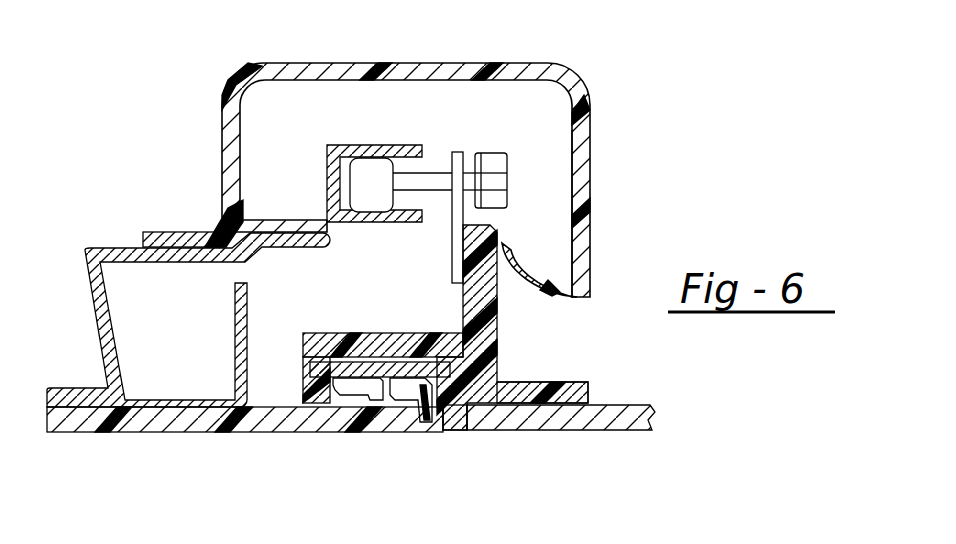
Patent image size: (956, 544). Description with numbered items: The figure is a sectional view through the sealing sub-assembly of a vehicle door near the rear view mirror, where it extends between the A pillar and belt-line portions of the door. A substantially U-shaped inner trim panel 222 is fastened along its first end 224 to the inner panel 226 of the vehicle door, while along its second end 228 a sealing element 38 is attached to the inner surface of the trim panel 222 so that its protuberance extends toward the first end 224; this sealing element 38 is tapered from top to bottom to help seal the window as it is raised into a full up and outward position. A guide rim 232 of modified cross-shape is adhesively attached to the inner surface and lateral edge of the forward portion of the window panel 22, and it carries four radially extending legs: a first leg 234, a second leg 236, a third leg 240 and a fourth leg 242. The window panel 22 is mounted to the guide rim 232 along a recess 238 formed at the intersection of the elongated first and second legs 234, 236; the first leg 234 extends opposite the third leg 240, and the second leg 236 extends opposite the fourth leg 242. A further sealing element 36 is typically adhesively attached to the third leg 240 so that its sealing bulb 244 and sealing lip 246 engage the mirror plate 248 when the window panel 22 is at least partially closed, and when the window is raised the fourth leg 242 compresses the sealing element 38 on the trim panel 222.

The window panel 22 is at (605, 432).
The sealing element 36 is at (303, 370).
The sealing element 38 is at (540, 262).
The inner trim panel 222 is at (413, 63).
The first end 224 is at (190, 233).
The inner panel 226 is at (141, 258).
The second end 228 is at (577, 197).
The guide rim 232 is at (455, 321).
The first leg 234 is at (590, 395).
The second leg 236 is at (457, 420).
The recess 238 is at (537, 408).
The third leg 240 is at (370, 345).
The fourth leg 242 is at (453, 242).
The sealing bulb 244 is at (440, 425).
The sealing lip 246 is at (350, 410).
The mirror plate 248 is at (297, 413).